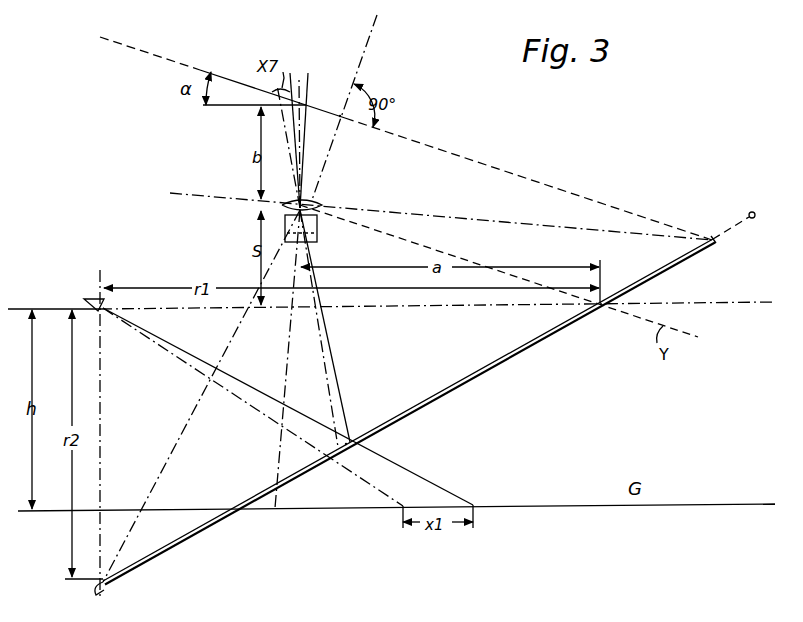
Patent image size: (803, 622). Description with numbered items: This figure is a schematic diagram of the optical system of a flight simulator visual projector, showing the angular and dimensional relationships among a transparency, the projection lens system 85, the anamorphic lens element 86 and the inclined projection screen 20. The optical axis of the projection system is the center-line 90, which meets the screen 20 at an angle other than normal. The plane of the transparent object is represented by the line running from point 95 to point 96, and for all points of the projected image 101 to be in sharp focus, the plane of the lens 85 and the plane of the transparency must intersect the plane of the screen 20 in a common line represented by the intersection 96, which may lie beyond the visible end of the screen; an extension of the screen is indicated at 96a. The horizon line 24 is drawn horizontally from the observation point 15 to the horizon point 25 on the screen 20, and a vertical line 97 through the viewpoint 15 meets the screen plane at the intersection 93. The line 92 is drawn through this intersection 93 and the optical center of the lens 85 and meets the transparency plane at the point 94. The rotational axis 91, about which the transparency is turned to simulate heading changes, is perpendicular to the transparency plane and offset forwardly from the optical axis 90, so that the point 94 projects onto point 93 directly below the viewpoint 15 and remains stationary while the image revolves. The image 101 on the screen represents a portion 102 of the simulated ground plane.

The observation point 15 is at (91, 297).
The inclined projection screen 20 is at (485, 368).
The horizon line 24 is at (389, 308).
The horizon point 25 is at (603, 301).
The projection lens system 85 is at (309, 203).
The anamorphic lens element 86 is at (317, 232).
The optical axis 90 is at (287, 349).
The rotational axis 91 is at (363, 61).
The line locating the rotational axis 92 is at (192, 404).
The intersection of screen plane and vertical line 93 is at (117, 592).
The point in transparency plane 94 is at (354, 137).
The transparency plane end point 95 is at (387, 131).
The intersection of lens, transparency and screen planes 96 is at (713, 238).
The extension point 96a is at (753, 208).
The vertical line through observation point 97 is at (103, 438).
The projected image 101 is at (340, 442).
The portion of simulated ground 102 is at (432, 505).